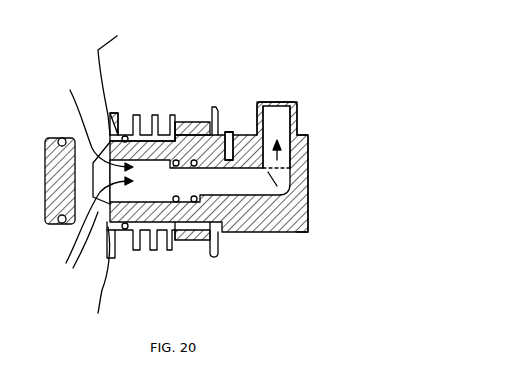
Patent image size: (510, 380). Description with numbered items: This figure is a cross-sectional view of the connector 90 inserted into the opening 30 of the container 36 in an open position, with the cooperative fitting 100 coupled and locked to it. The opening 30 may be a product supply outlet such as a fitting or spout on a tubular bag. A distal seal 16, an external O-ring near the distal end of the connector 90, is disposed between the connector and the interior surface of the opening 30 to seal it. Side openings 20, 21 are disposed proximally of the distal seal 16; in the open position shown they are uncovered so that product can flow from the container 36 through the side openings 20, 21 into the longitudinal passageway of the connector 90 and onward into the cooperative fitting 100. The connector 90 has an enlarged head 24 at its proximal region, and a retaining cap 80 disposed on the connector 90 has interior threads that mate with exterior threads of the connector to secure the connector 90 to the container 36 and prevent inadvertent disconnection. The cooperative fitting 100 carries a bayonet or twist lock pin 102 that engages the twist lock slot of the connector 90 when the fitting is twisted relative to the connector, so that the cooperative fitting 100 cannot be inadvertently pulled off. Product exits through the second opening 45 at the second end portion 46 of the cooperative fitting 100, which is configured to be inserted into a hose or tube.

The distal seal 16 is at (63, 223).
The side opening 20 is at (83, 137).
The side opening 21 is at (89, 222).
The enlarged head 24 is at (218, 108).
The opening 30 is at (128, 112).
The container 36 is at (114, 169).
The second opening 45 is at (280, 115).
The second end portion 46 is at (298, 133).
The retaining cap 80 is at (190, 122).
The connector 90 is at (213, 262).
The cooperative fitting 100 is at (295, 255).
The twist lock pin 102 is at (231, 132).